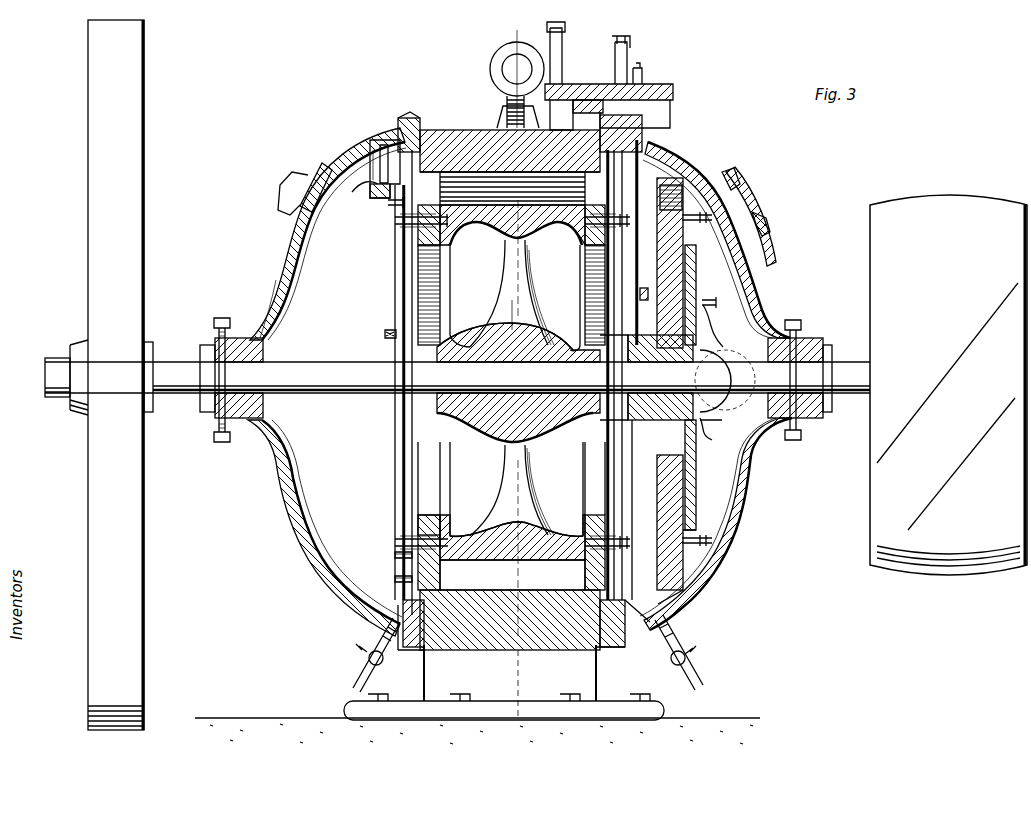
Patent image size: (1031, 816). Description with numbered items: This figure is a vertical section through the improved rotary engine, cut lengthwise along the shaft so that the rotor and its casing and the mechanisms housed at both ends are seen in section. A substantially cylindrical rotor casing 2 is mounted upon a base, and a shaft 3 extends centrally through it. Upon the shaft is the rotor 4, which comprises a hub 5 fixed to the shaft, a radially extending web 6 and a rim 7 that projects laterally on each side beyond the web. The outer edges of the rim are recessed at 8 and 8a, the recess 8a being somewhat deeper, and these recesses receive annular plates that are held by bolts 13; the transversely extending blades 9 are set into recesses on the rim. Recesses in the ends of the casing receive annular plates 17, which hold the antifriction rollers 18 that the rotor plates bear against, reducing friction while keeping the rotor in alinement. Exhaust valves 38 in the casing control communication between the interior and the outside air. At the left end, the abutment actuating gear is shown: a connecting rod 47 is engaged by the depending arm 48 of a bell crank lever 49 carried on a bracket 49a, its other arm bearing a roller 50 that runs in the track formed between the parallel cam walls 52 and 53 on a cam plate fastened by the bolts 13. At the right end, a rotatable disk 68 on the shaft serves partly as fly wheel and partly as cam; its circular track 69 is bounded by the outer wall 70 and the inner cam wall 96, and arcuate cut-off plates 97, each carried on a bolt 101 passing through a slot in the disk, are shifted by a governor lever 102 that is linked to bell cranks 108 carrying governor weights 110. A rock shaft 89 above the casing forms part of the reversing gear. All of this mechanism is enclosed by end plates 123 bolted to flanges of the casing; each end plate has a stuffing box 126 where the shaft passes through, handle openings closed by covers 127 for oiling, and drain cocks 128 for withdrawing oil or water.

The rotor casing 2 is at (520, 382).
The shaft 3 is at (360, 393).
The rotor 4 is at (565, 208).
The hub 5 is at (490, 420).
The web 6 is at (528, 268).
The rim 7 is at (492, 224).
The recess 8 is at (432, 262).
The recess 8a is at (432, 518).
The blades 9 is at (462, 178).
The bolts 13 is at (412, 228).
The annular plates 17 is at (402, 128).
The antifriction rollers 18 is at (595, 612).
The exhaust valves 38 is at (382, 655).
The connecting rod 47 is at (384, 334).
The depending arm 48 is at (396, 290).
The bell crank lever 49 is at (376, 140).
The bracket 49a is at (374, 195).
The roller 50 is at (512, 189).
The cam wall 52 is at (375, 198).
The cam wall 53 is at (396, 208).
The disk 68 is at (697, 270).
The circular track 69 is at (683, 205).
The outer wall 70 is at (690, 592).
The rock shaft 89 is at (648, 92).
The inner cam wall 96 is at (664, 252).
The cut-off plates 97 is at (683, 540).
The bolt 101 is at (750, 208).
The governor lever 102 is at (770, 232).
The bell cranks 108 is at (722, 330).
The governor weights 110 is at (708, 438).
The end plates 123 is at (280, 298).
The stuffing box 126 is at (256, 336).
The covers 127 is at (312, 178).
The drain cocks 128 is at (688, 636).